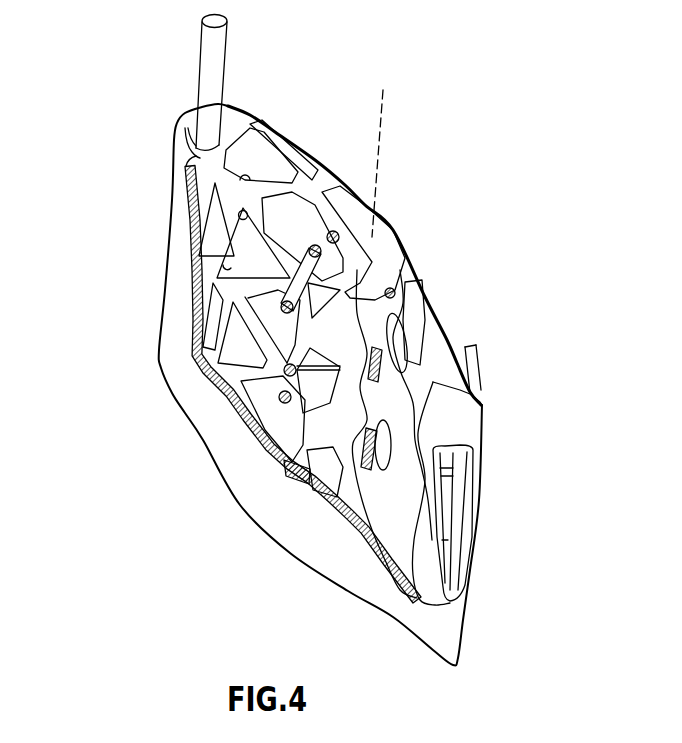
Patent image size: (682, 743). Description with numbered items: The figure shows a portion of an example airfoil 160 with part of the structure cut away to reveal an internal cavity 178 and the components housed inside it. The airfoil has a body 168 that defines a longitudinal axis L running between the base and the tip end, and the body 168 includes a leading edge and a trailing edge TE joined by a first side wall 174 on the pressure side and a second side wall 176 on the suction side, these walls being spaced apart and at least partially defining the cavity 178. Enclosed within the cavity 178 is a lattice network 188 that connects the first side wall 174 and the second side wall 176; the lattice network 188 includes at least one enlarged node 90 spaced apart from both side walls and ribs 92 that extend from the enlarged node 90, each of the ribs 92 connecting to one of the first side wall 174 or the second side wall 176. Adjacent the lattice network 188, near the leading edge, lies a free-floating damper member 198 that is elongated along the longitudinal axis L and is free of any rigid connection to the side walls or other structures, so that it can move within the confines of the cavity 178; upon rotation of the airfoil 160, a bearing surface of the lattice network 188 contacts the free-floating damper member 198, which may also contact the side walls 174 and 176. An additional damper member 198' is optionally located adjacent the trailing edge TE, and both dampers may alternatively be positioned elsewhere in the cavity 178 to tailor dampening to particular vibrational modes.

The airfoil 160 is at (126, 263).
The body 168 is at (472, 430).
The first side wall 174 is at (187, 166).
The second side wall 176 is at (244, 117).
The cavity 178 is at (383, 237).
The lattice network 188 is at (222, 158).
The enlarged node 90 is at (340, 332).
The ribs 92 is at (335, 333).
The free-floating damper member 198 is at (258, 83).
The additional damper member 198' is at (523, 355).
The longitudinal axis L is at (380, 123).
The trailing edge TE is at (476, 507).